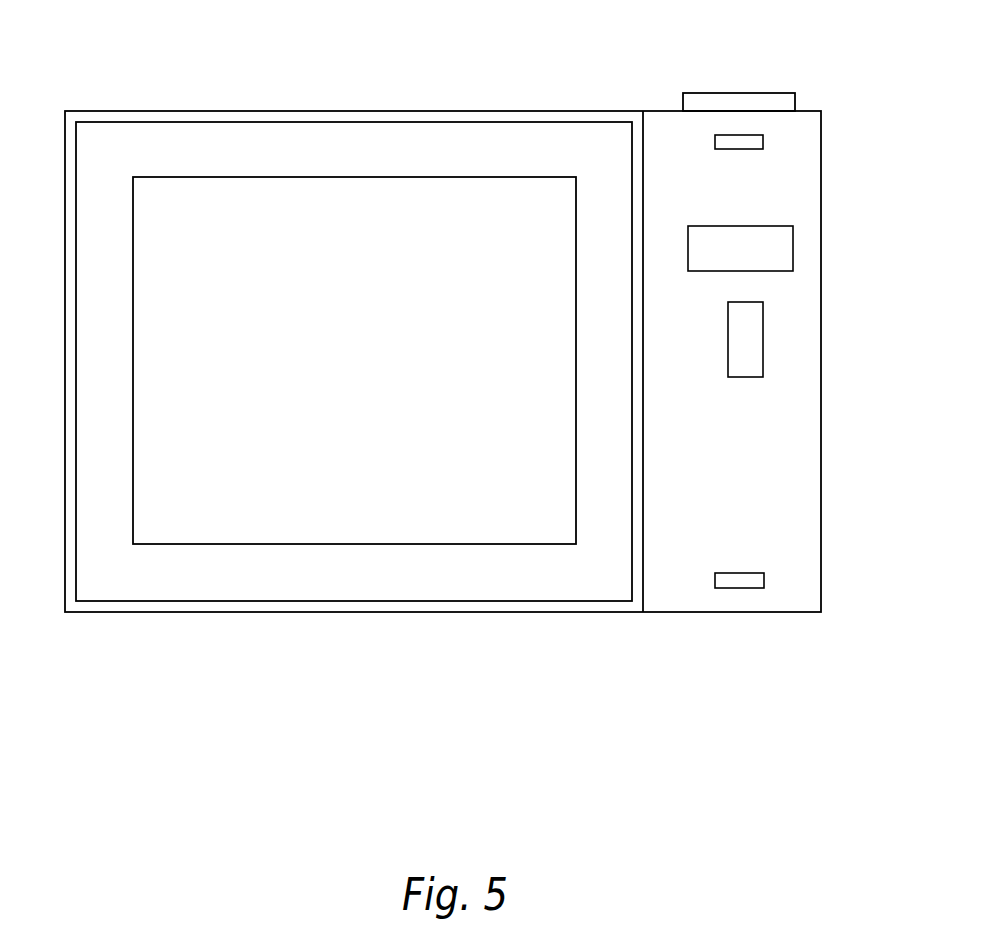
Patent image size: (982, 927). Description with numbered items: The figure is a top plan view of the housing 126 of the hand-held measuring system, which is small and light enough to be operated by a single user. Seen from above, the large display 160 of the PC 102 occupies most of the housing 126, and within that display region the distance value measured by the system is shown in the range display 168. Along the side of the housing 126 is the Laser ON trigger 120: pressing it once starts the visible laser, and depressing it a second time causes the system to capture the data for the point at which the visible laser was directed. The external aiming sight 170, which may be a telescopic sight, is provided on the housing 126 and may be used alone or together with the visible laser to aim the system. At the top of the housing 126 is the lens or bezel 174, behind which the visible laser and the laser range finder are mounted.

The PC 102 is at (245, 578).
The Laser ON trigger 120 is at (763, 336).
The housing 126 is at (427, 612).
The display 160 is at (210, 195).
The range display 168 is at (793, 237).
The external aiming sight 170 is at (763, 143).
The lens or bezel 174 is at (707, 93).